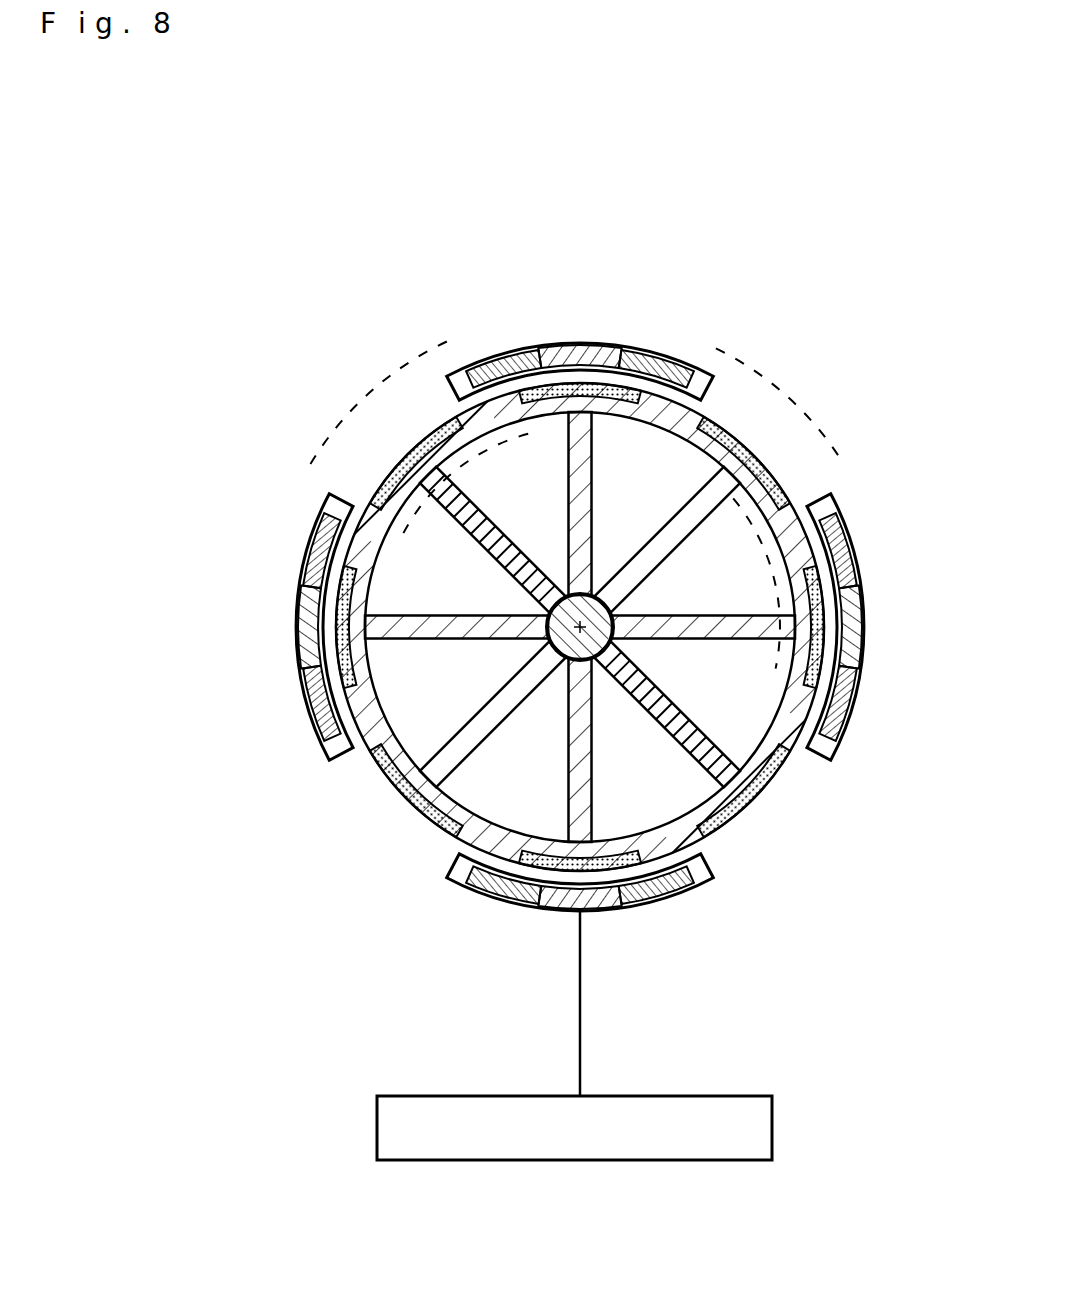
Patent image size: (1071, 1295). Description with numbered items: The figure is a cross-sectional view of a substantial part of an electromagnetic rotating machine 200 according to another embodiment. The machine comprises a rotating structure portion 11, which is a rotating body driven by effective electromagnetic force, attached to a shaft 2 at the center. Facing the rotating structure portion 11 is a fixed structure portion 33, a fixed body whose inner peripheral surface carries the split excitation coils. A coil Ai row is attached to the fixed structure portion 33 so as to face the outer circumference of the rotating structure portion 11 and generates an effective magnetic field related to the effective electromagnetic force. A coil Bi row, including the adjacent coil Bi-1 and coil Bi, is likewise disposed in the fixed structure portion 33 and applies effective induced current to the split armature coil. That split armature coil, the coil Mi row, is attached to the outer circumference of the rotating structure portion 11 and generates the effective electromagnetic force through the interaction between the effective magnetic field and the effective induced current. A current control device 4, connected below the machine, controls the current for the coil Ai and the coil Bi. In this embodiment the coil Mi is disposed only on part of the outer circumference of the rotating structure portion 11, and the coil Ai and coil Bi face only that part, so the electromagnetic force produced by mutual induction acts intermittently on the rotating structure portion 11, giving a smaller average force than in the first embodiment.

The electromagnetic rotating machine 200 is at (630, 133).
The shaft 2 is at (537, 652).
The rotating structure portion 11 is at (798, 743).
The fixed structure portion 33 is at (614, 576).
The coil A_i Ai is at (588, 352).
The coil B_i-1 Bi-1 is at (463, 321).
The coil B_i Bi is at (645, 365).
The coil M_i Mi is at (597, 396).
The current control device 4 is at (525, 1096).